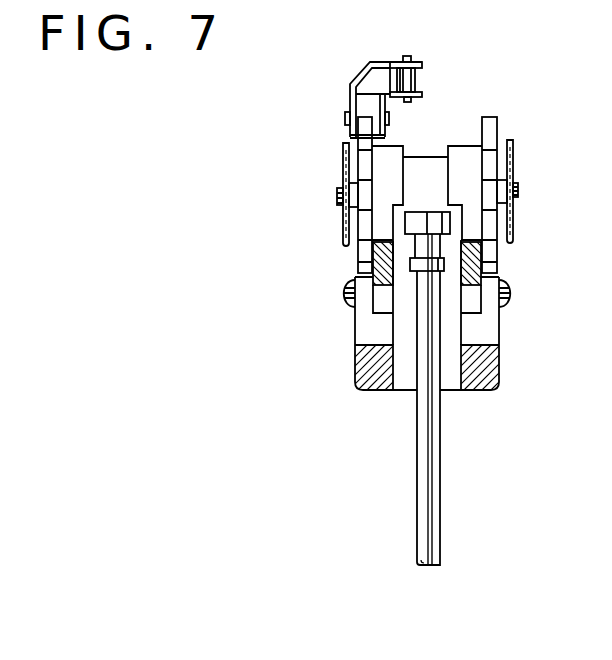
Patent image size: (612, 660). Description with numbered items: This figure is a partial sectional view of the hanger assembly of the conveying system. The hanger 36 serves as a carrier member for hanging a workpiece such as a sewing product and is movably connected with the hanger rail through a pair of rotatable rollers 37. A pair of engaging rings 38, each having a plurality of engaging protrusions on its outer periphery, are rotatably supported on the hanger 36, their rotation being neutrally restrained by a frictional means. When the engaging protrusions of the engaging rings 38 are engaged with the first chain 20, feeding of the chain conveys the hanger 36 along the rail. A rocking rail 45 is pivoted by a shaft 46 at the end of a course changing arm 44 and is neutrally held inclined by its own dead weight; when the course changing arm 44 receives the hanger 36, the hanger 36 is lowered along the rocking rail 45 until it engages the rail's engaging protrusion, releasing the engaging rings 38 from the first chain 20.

The first chain 20 is at (353, 78).
The hanger 36 is at (417, 512).
The rotatable rollers 37 is at (403, 147).
The engaging rings 38 is at (352, 146).
The course changing arm 44 is at (487, 367).
The rocking rail 45 is at (498, 255).
The shaft 46 is at (347, 306).